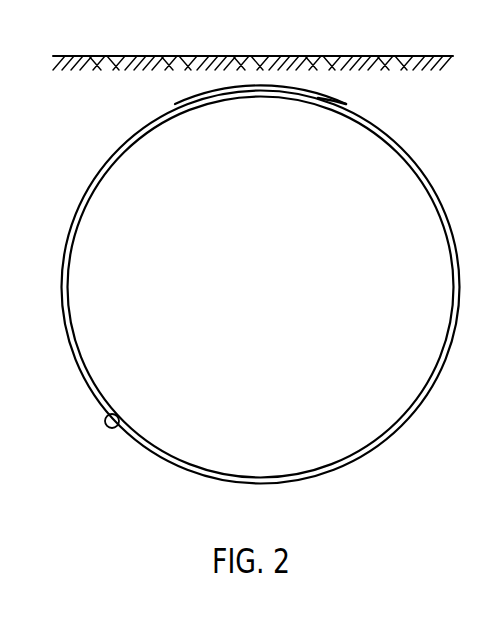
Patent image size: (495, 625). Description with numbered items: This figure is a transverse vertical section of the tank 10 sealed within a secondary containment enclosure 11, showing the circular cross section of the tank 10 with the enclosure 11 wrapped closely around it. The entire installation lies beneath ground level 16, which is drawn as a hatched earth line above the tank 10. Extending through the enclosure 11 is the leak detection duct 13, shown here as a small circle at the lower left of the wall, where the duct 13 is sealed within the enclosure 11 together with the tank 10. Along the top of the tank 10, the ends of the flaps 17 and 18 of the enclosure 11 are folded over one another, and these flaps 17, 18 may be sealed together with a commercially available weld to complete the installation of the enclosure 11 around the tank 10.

The tank 10 is at (291, 248).
The enclosure 11 is at (433, 190).
The leak detection duct 13 is at (104, 421).
The ground level 16 is at (292, 56).
The flap 17 is at (195, 99).
The flap 18 is at (328, 103).